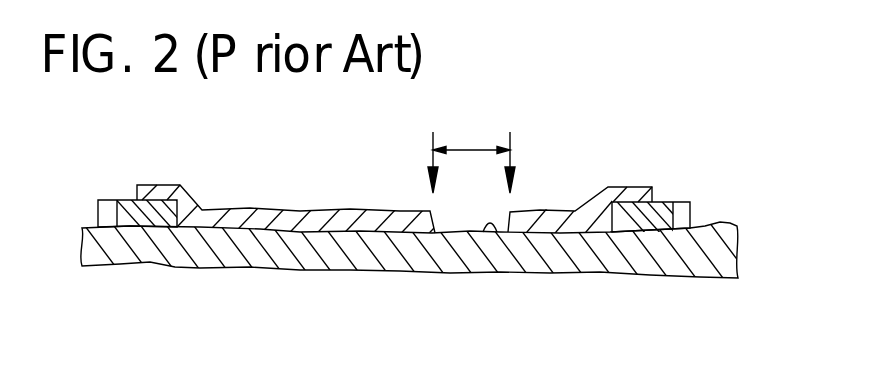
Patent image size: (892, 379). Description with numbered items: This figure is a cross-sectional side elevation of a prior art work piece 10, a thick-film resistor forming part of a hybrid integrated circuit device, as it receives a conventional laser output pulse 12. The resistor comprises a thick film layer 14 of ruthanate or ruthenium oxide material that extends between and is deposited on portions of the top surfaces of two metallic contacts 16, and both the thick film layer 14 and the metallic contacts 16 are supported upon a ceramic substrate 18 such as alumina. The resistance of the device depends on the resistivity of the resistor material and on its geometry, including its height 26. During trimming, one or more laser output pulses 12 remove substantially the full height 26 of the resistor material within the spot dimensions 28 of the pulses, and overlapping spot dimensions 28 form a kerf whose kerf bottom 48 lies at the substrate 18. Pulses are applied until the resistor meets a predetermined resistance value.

The work piece 10 is at (618, 123).
The laser output pulse 12 is at (513, 130).
The thick film layer 14 is at (228, 210).
The metallic contacts 16 is at (132, 200).
The ceramic substrate 18 is at (720, 243).
The height 26 is at (545, 282).
The spot dimensions 28 is at (472, 153).
The kerf bottom 48 is at (497, 232).